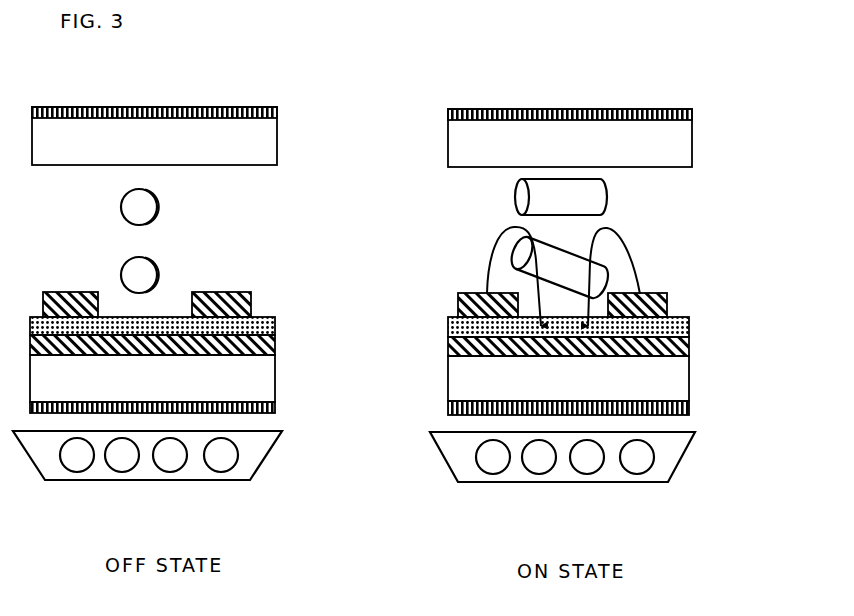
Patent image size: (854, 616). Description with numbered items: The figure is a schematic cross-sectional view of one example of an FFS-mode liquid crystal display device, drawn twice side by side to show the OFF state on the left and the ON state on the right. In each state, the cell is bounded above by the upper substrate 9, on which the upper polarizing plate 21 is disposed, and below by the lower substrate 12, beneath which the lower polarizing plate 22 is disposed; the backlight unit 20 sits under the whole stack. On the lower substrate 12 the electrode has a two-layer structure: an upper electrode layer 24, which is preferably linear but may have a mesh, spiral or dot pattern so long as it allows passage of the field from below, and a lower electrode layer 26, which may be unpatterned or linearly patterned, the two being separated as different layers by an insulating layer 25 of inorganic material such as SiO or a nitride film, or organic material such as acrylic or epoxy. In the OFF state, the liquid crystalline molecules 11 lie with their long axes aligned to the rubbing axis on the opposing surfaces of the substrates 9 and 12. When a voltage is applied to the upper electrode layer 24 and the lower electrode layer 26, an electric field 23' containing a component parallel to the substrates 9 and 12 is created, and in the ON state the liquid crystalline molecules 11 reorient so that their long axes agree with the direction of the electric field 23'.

The upper substrate of liquid crystal cell 9 is at (448, 158).
The upper polarizing plate 21 is at (437, 122).
The liquid crystal molecule 11 is at (165, 218).
The direction of applied electric field 23' is at (488, 276).
The linear electrode 24 is at (460, 297).
The insulating layer 25 is at (448, 332).
The electrode 26 is at (448, 350).
The lower substrate of liquid crystal cell 12 is at (448, 388).
The lower polarizing plate 22 is at (448, 413).
The backlight unit 20 is at (440, 453).